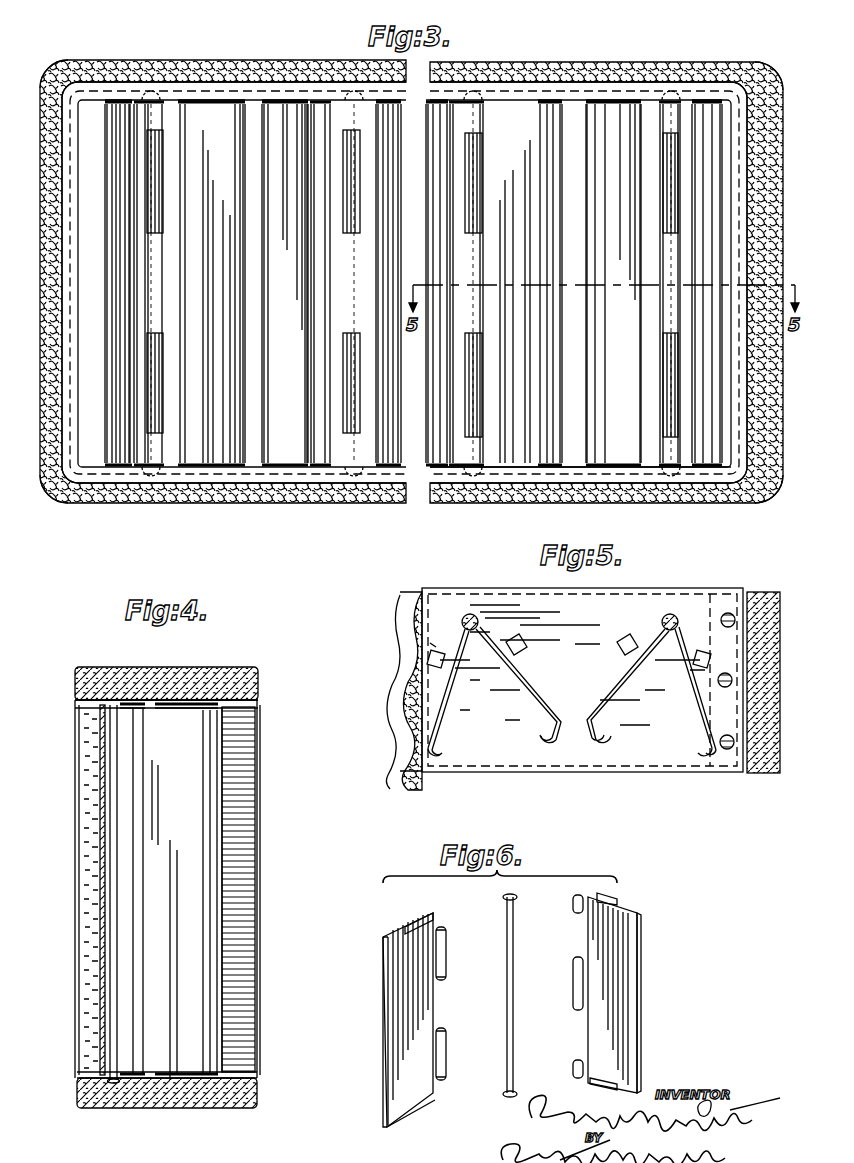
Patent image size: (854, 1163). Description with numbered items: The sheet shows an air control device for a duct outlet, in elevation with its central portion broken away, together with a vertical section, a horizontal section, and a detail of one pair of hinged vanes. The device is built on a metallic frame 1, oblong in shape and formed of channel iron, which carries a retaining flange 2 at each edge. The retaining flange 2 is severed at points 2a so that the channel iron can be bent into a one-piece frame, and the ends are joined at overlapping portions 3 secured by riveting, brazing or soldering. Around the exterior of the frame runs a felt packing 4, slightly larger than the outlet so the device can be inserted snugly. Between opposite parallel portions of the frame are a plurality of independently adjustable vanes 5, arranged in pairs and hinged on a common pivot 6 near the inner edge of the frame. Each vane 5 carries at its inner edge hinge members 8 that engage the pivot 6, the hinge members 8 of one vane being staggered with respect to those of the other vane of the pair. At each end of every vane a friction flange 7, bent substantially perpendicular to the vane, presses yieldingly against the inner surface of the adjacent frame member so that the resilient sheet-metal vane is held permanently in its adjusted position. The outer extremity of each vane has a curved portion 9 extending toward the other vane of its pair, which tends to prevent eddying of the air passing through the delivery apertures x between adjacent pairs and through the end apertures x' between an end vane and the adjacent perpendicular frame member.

In FIG. 3, the metallic frame 1 is at (232, 100).
In FIG. 4, the metallic frame 1 is at (186, 692).
In FIG. 5, the metallic frame 1 is at (523, 607).
In FIG. 3, the retaining flange 2 is at (276, 90).
In FIG. 4, the retaining flange 2 is at (75, 691).
In FIG. 5, the retaining flange 2 is at (548, 590).
In FIG. 3, the severed points of retaining flange 2a is at (78, 70).
In FIG. 3, the overlapping portions 3 is at (740, 476).
In FIG. 5, the overlapping portions 3 is at (713, 773).
In FIG. 3, the packing 4 is at (292, 490).
In FIG. 4, the packing 4 is at (148, 672).
In FIG. 5, the packing 4 is at (400, 642).
In FIG. 3, the vane 5 is at (135, 178).
In FIG. 4, the vane 5 is at (169, 894).
In FIG. 5, the vane 5 is at (441, 703).
In FIG. 6, the vane 5 is at (412, 1012).
In FIG. 3, the pivot 6 is at (151, 468).
In FIG. 4, the pivot 6 is at (106, 770).
In FIG. 5, the pivot 6 is at (472, 631).
In FIG. 6, the pivot 6 is at (514, 962).
In FIG. 3, the friction flange 7 is at (130, 96).
In FIG. 4, the friction flange 7 is at (143, 700).
In FIG. 5, the friction flange 7 is at (446, 648).
In FIG. 6, the friction flange 7 is at (408, 918).
In FIG. 3, the hinge members 8 is at (146, 208).
In FIG. 4, the hinge members 8 is at (100, 746).
In FIG. 5, the hinge members 8 is at (726, 681).
In FIG. 6, the hinge members 8 is at (446, 950).
In FIG. 3, the curved portion 9 is at (122, 148).
In FIG. 4, the curved portion 9 is at (214, 872).
In FIG. 5, the curved portion 9 is at (432, 758).
In FIG. 6, the curved portion 9 is at (382, 1027).
In FIG. 3, the delivery aperture x is at (407, 348).
In FIG. 5, the delivery aperture x is at (570, 726).
In FIG. 3, the end delivery aperture x' is at (412, 342).
In FIG. 5, the end delivery aperture x' is at (734, 723).